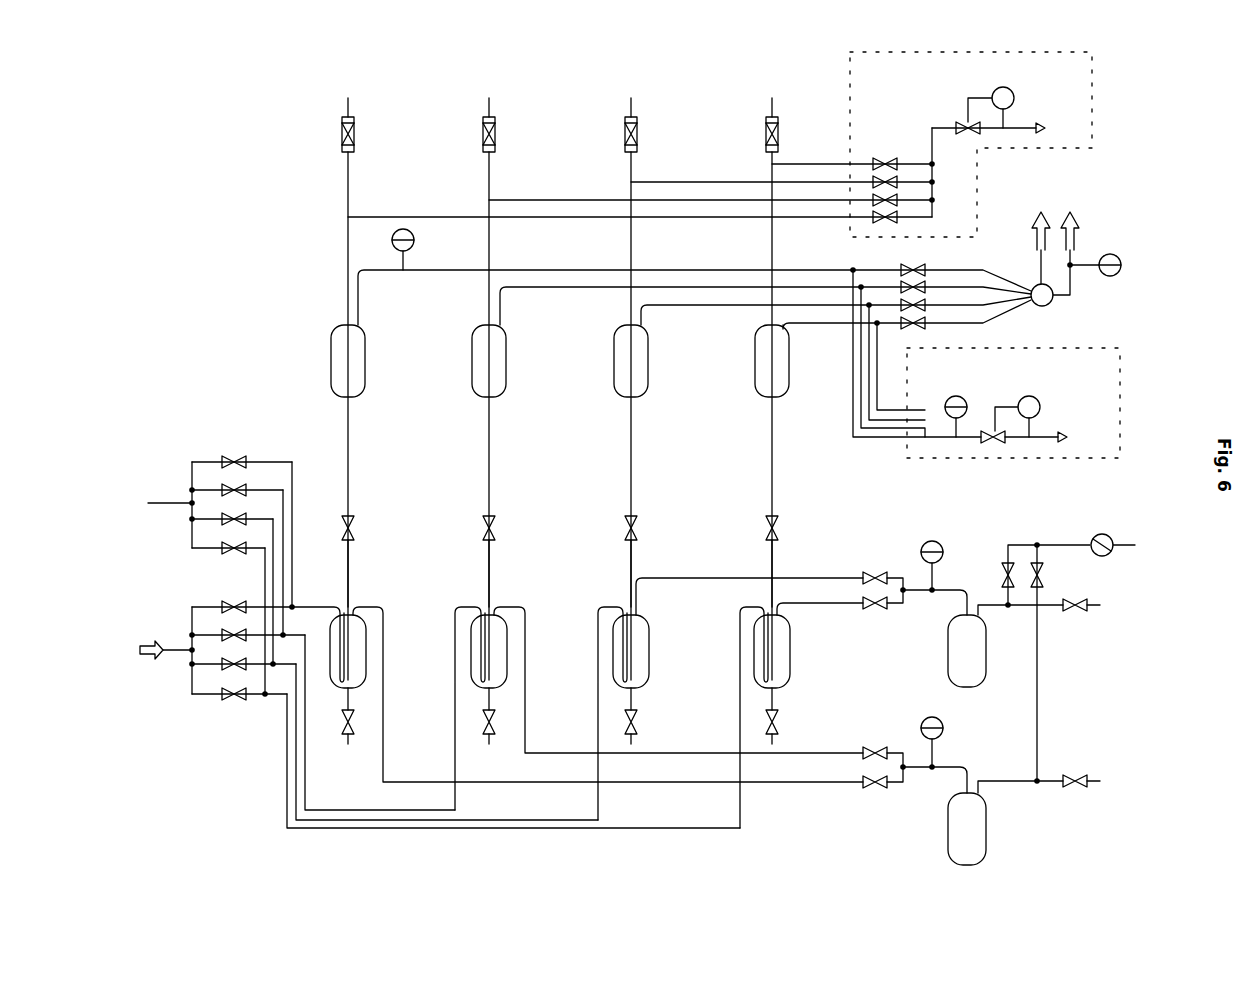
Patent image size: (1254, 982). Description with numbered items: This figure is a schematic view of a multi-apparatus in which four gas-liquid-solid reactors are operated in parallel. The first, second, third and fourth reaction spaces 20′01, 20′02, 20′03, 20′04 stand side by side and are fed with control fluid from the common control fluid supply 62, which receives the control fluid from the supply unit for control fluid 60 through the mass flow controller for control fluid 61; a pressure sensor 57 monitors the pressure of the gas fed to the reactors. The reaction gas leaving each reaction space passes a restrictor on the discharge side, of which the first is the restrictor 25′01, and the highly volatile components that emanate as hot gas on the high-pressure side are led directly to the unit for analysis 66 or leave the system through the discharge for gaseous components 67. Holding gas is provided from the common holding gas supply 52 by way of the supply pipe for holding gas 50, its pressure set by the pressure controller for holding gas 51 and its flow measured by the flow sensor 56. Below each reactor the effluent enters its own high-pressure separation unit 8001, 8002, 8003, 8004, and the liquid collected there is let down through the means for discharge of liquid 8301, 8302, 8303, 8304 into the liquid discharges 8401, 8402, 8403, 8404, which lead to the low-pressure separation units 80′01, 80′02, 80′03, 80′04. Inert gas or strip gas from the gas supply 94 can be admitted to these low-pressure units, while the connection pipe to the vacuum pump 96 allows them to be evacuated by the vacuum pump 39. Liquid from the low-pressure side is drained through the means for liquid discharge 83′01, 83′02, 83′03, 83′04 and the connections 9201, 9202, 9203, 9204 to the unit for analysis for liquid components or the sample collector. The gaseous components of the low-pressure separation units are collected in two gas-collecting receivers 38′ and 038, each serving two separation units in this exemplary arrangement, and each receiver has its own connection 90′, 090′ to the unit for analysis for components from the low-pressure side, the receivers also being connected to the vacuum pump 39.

The reaction space no. 1 20′01 is at (342, 122).
The reaction space no. 2 20′02 is at (483, 122).
The reaction space no. 3 20′03 is at (625, 122).
The reaction space no. 4 20′04 is at (766, 122).
The common control fluid supply 62 is at (975, 50).
The mass flow controller for control fluid 61 is at (990, 93).
The supply unit for control fluid 60 is at (1040, 126).
The unit for analysis for highly volatile gaseous components 66 is at (1037, 237).
The discharge for gaseous components 67 is at (1066, 242).
The pressure sensor 57 is at (416, 241).
The restrictor no. 1 on the discharge side of the reaction gas 25′01 is at (918, 268).
The high-pressure separation unit no. 1 8001 is at (333, 364).
The high-pressure separation unit no. 2 8002 is at (474, 364).
The high-pressure separation unit no. 3 8003 is at (616, 364).
The high-pressure separation unit no. 4 8004 is at (757, 364).
The flow sensor 56 is at (955, 396).
The pressure controller for holding gas 51 is at (991, 431).
The supply pipe for holding gas 50 is at (1063, 432).
The common holding gas supply 52 is at (1008, 462).
The connection pipe to vacuum pump 96 is at (190, 503).
The gas supply 94 is at (422, 714).
The means for discharge of liquid no. 1 8301 is at (352, 520).
The means for discharge of liquid no. 2 8302 is at (493, 520).
The means for discharge of liquid no. 3 8303 is at (635, 520).
The means for discharge of liquid no. 4 8304 is at (776, 520).
The liquid discharge no. 1 8401 is at (352, 565).
The liquid discharge no. 2 8402 is at (493, 565).
The liquid discharge no. 3 8403 is at (635, 565).
The liquid discharge no. 4 8404 is at (776, 565).
The vacuum pump 39 is at (1110, 537).
The low-pressure separation unit no. 1 80′01 is at (336, 655).
The low-pressure separation unit no. 2 80′02 is at (477, 655).
The low-pressure separation unit no. 3 80′03 is at (619, 655).
The low-pressure separation unit no. 4 80′04 is at (760, 655).
The gas-collecting receiver 038 is at (958, 640).
The connection to unit for analysis 090′ is at (1103, 605).
The means for liquid discharge (low-pressure side) no. 1 83′01 is at (354, 718).
The means for liquid discharge (low-pressure side) no. 2 83′02 is at (495, 718).
The means for liquid discharge (low-pressure side) no. 3 83′03 is at (637, 718).
The means for liquid discharge (low-pressure side) no. 4 83′04 is at (778, 718).
The connection no. 1 to the unit for analysis for liquid components 9201 is at (344, 752).
The connection no. 2 to the unit for analysis for liquid components 9202 is at (485, 752).
The connection no. 3 to the unit for analysis for liquid components 9203 is at (627, 757).
The connection no. 4 to the unit for analysis for liquid components 9204 is at (769, 757).
The gas-collecting receiver 38′ is at (958, 816).
The connection to unit for analysis 90′ is at (1098, 782).